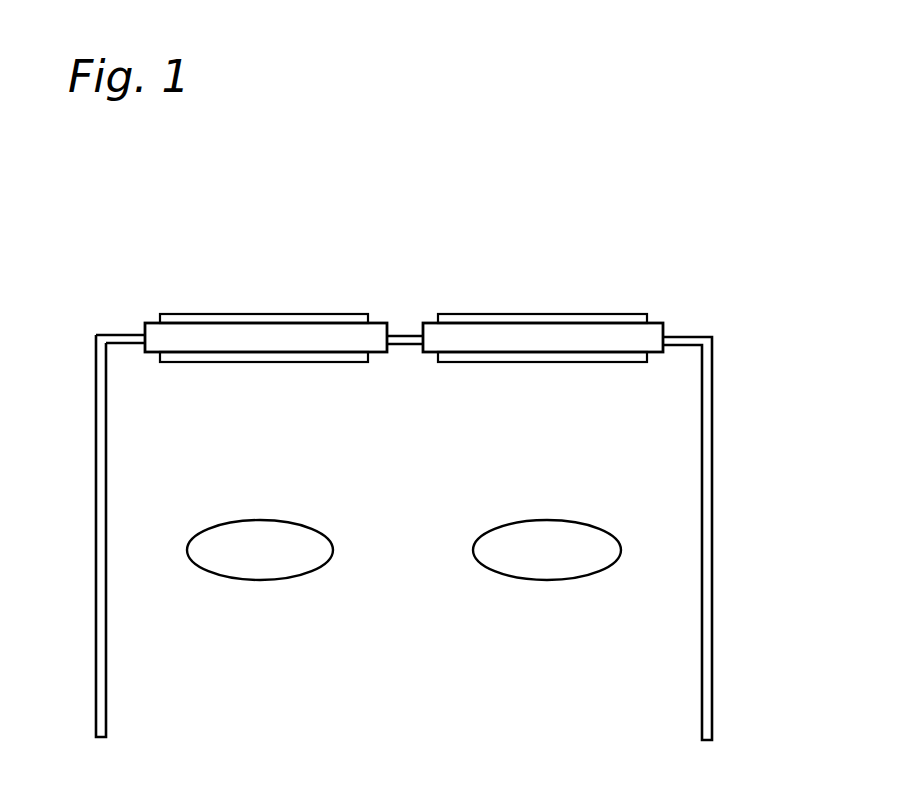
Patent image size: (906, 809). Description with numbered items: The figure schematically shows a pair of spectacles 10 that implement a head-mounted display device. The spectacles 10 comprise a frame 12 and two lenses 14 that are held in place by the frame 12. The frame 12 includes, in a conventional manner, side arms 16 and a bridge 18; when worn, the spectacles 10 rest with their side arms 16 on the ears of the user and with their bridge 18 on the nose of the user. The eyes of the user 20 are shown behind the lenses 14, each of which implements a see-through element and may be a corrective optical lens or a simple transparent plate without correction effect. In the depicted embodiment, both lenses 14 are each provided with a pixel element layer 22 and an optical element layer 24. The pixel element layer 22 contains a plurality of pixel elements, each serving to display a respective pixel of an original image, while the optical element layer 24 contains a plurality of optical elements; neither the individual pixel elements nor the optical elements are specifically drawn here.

The spectacles 10 is at (536, 218).
The frame 12 is at (413, 535).
The lenses 14 is at (256, 325).
The side arms 16 is at (95, 590).
The bridge 18 is at (403, 348).
The eyes of the user 20 is at (258, 580).
The pixel element layer 22 is at (252, 366).
The optical element layer 24 is at (280, 314).